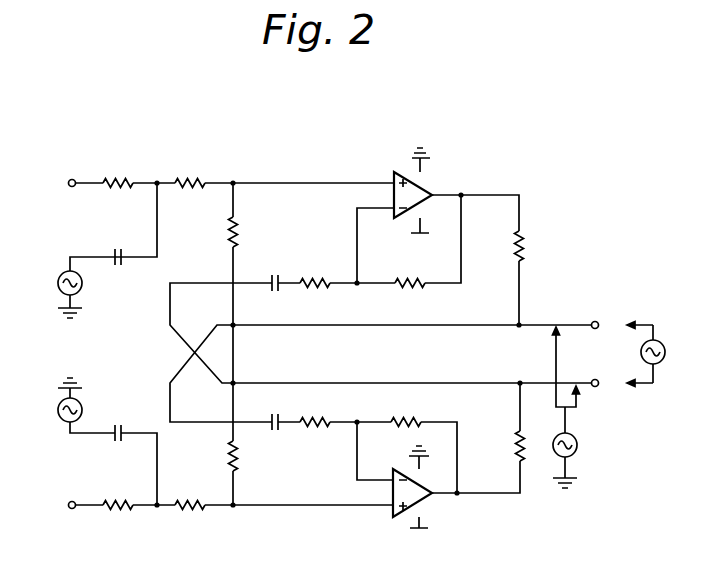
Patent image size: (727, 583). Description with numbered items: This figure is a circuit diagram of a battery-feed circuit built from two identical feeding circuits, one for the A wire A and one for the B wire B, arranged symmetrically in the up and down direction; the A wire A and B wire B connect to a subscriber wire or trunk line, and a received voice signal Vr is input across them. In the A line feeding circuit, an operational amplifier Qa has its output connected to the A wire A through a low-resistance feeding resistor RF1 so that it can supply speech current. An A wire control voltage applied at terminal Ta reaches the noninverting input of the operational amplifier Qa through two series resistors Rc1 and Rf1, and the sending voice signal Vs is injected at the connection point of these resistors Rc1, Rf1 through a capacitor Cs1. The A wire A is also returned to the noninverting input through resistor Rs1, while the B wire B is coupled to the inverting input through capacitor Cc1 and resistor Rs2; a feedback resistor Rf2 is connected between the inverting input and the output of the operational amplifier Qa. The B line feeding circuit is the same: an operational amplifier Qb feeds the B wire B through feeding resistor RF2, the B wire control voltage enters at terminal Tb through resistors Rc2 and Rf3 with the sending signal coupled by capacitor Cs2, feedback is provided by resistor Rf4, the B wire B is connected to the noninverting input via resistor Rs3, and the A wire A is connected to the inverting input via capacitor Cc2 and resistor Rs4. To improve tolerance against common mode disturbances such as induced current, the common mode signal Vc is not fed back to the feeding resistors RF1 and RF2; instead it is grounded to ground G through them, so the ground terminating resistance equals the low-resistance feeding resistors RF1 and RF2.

The terminal Tb is at (52, 183).
The terminal Ta is at (52, 504).
The A wire A is at (606, 383).
The B wire B is at (606, 325).
The resistor Rc2 is at (118, 178).
The resistor Rf3 is at (190, 178).
The resistor Rc1 is at (118, 512).
The resistor Rf1 is at (190, 512).
The resistor Rs3 is at (240, 233).
The resistor Rs1 is at (240, 456).
The resistor Rs4 is at (315, 290).
The resistor Rf4 is at (410, 290).
The resistor Rs2 is at (316, 417).
The feedback resistor Rf2 is at (406, 416).
The feeding resistor RF2 is at (527, 247).
The feeding resistor RF1 is at (512, 446).
The capacitor Cs2 is at (118, 247).
The capacitor Cs1 is at (118, 422).
The capacitor Cc2 is at (275, 274).
The capacitor Cc1 is at (274, 414).
The sending voice signal Vs is at (56, 281).
The received voice signal Vr is at (665, 353).
The common mode signal Vc is at (578, 446).
The operational amplifier Qb is at (428, 183).
The operational amplifier Qa is at (426, 497).
The ground G is at (328, 316).